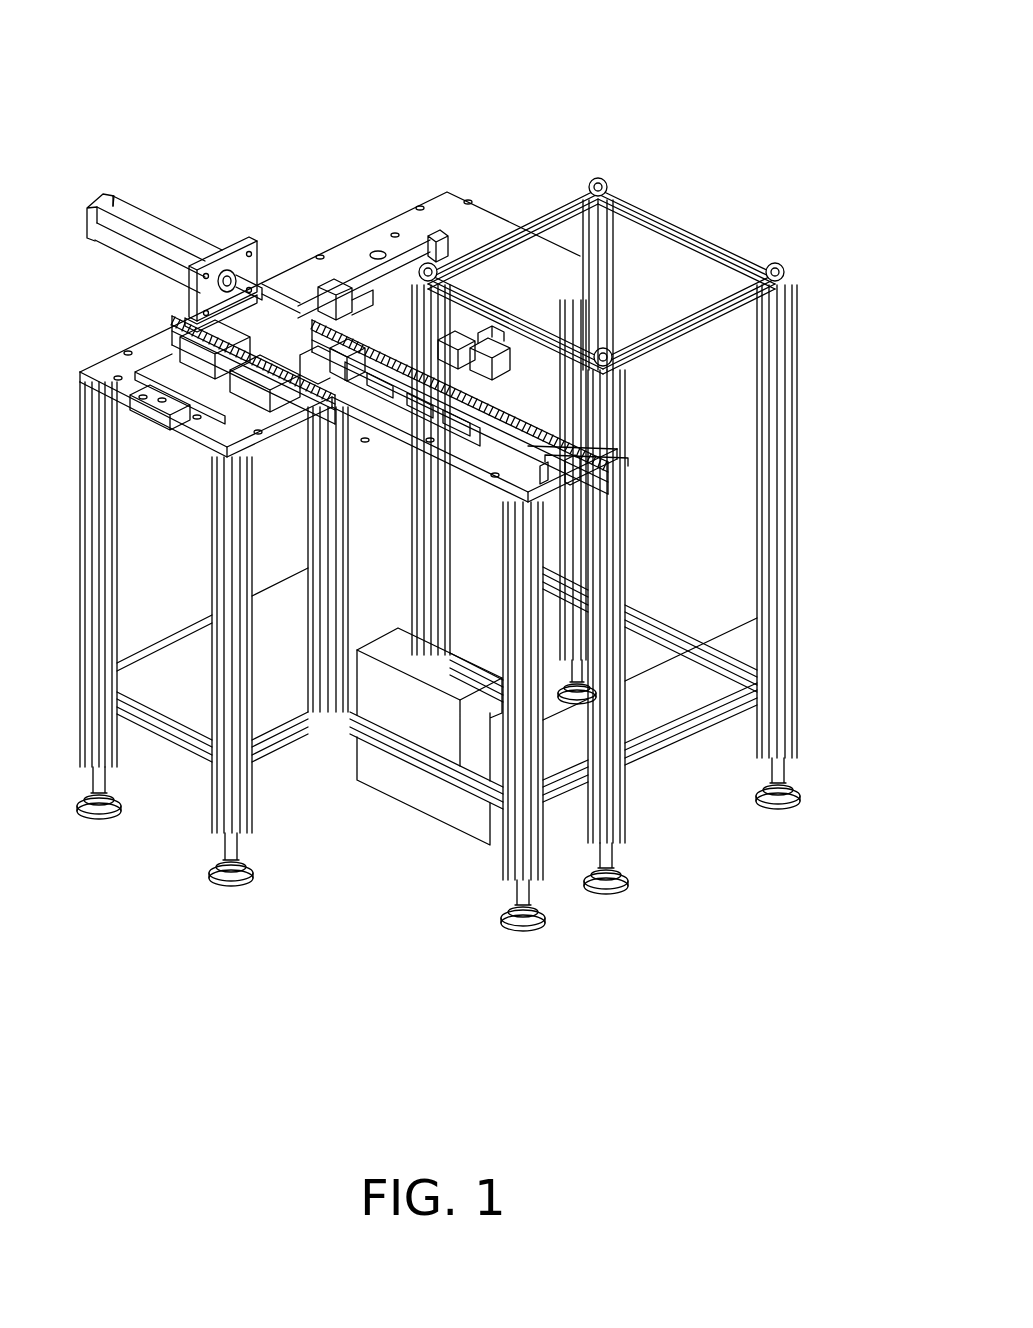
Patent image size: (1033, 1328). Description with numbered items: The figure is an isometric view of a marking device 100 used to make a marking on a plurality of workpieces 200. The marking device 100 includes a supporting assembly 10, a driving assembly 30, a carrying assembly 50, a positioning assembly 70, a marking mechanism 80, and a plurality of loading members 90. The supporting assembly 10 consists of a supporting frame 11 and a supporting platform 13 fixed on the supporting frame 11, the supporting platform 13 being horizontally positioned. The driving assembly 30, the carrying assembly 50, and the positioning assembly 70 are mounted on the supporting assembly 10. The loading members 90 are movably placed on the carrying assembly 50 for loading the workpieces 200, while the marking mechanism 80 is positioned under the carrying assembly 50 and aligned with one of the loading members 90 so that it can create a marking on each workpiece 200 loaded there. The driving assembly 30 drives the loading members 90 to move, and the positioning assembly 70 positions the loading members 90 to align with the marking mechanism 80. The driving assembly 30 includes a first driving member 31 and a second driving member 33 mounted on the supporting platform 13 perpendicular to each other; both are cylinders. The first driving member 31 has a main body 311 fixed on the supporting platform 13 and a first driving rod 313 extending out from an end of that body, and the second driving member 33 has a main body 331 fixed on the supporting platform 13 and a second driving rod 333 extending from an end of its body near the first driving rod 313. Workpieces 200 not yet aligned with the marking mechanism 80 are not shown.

The marking device 100 is at (620, 86).
The supporting assembly 10 is at (705, 493).
The supporting frame 11 is at (608, 508).
The supporting platform 13 is at (528, 483).
The driving assembly 30 is at (345, 125).
The first driving member 31 is at (260, 176).
The main body 311 is at (178, 247).
The first driving rod 313 is at (225, 250).
The second driving member 33 is at (380, 176).
The main body 331 is at (393, 255).
The second driving rod 333 is at (313, 307).
The carrying assembly 50 is at (158, 333).
The workpieces 200 is at (462, 335).
The positioning assembly 70 is at (505, 348).
The loading members 90 is at (622, 462).
The marking mechanism 80 is at (460, 735).